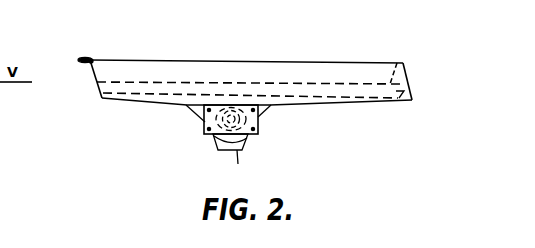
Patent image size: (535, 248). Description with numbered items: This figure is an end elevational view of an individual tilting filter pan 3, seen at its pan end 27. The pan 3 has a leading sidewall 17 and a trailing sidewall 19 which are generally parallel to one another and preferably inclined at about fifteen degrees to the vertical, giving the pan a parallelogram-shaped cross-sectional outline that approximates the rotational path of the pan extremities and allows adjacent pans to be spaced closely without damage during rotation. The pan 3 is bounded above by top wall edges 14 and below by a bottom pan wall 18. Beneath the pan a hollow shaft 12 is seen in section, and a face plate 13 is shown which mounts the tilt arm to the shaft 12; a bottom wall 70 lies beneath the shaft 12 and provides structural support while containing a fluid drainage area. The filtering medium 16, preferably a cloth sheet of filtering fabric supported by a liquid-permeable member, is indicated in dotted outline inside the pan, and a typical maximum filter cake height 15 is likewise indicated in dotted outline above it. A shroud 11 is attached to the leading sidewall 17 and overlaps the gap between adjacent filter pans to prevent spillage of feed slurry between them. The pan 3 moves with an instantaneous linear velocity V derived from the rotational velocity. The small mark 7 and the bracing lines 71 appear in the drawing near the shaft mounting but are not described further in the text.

The tilting filter pan 3 is at (432, 108).
The indicator mark 7 is at (400, 94).
The shroud 11 is at (96, 52).
The hollow shaft 12 is at (214, 143).
The face plate 13 is at (262, 120).
The top wall edges 14 is at (218, 62).
The maximum filter cake height 15 is at (395, 60).
The filtering medium 16 is at (407, 85).
The leading sidewall 17 is at (95, 79).
The bottom pan wall 18 is at (127, 103).
The trailing sidewall 19 is at (413, 90).
The pan end 27 is at (187, 76).
The bottom wall 70 is at (238, 164).
The brace 71 is at (201, 120).